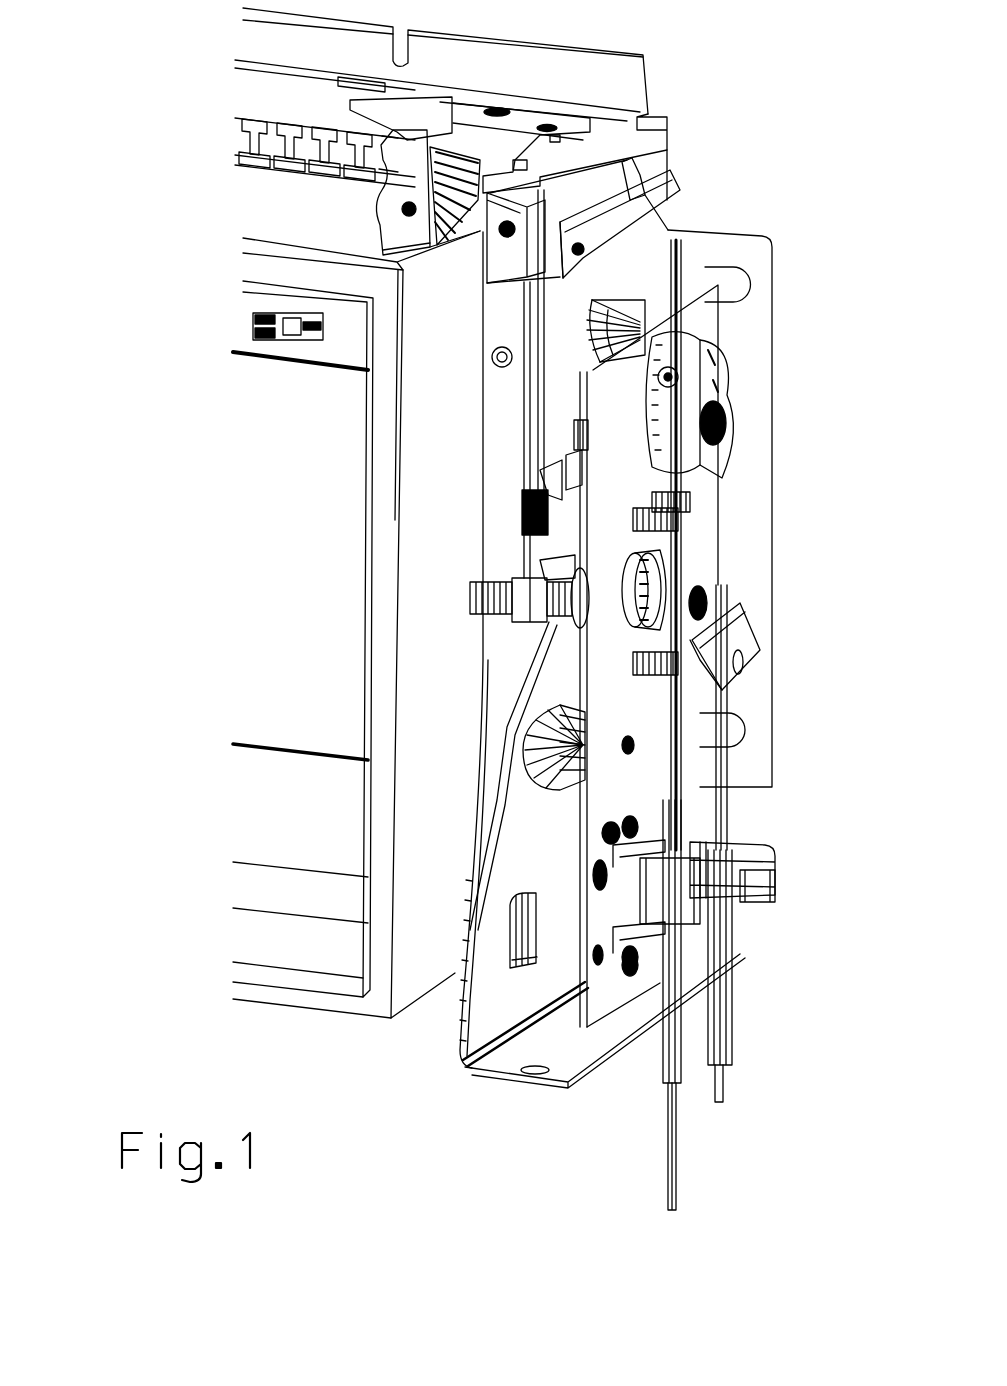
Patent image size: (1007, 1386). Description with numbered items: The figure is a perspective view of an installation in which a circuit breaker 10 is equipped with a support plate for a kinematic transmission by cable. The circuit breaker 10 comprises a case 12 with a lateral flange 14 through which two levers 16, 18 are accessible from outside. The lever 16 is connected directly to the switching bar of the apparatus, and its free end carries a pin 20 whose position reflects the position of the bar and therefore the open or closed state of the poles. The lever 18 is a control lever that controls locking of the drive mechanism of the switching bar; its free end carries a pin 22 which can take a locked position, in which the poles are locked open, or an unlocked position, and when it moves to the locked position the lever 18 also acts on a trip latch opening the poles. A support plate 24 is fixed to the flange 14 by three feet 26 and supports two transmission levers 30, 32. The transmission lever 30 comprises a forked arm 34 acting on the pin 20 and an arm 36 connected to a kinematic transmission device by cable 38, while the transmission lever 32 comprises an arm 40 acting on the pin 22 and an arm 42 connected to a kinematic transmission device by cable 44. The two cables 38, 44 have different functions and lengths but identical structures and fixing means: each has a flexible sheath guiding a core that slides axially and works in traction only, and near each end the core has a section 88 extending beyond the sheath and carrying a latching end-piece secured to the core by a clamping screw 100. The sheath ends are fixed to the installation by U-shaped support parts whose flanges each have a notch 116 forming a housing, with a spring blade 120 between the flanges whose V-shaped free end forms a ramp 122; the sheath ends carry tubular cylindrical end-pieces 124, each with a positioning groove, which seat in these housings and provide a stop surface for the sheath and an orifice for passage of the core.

The circuit breaker 10 is at (187, 597).
The case 12 is at (405, 397).
The lateral flange 14 is at (455, 1040).
The lever 16 is at (523, 603).
The control lever 18 is at (548, 489).
The pin 20 is at (522, 607).
The pin 22 is at (578, 462).
The support plate 24 is at (590, 1010).
The feet 26 is at (695, 255).
The transmission lever 30 is at (745, 593).
The transmission lever 32 is at (752, 421).
The forked arm 34 is at (563, 571).
The arm 36 is at (750, 687).
The cable 38 is at (750, 1007).
The arm 40 is at (580, 440).
The arm 42 is at (727, 367).
The cable 44 is at (690, 1157).
The section 88 is at (775, 741).
The clamping screw 100 is at (617, 352).
The notch 116 is at (750, 843).
The spring blade 120 is at (773, 860).
The ramp 122 is at (760, 890).
The tubular cylindrical end-piece 124 is at (670, 912).